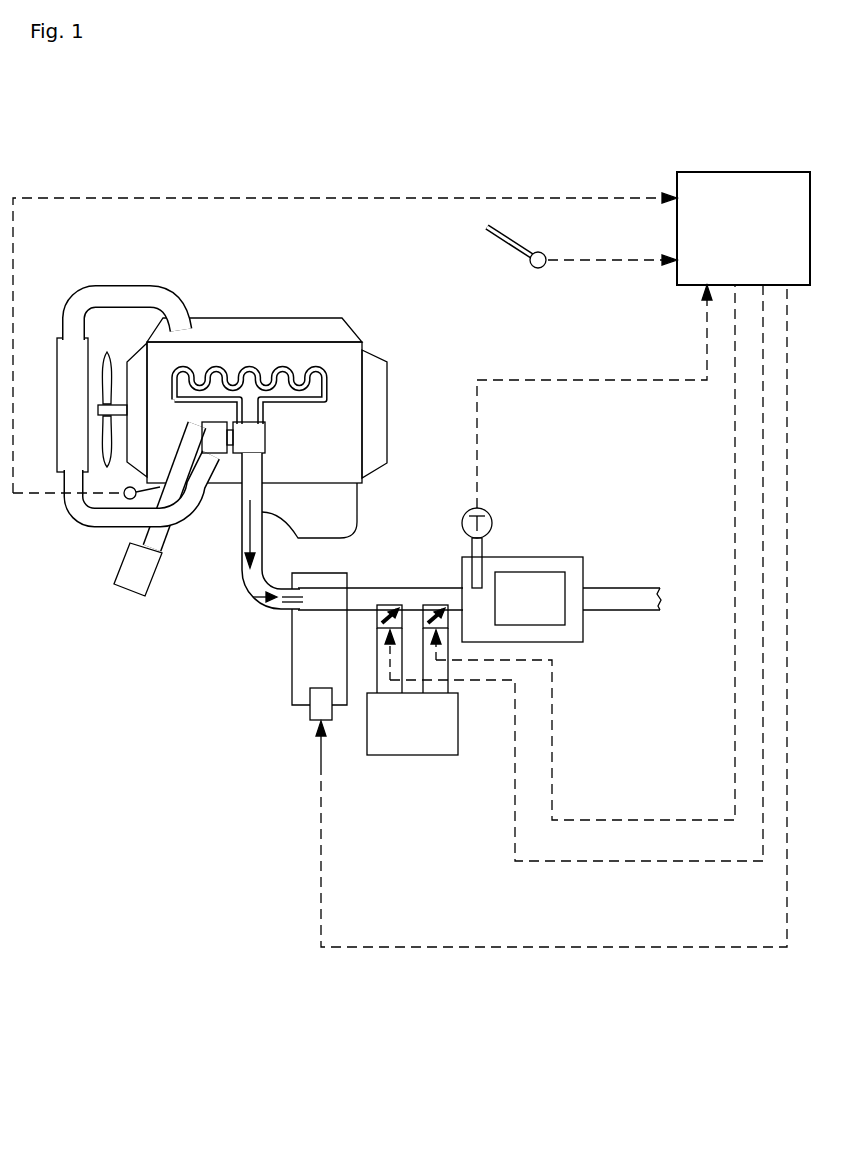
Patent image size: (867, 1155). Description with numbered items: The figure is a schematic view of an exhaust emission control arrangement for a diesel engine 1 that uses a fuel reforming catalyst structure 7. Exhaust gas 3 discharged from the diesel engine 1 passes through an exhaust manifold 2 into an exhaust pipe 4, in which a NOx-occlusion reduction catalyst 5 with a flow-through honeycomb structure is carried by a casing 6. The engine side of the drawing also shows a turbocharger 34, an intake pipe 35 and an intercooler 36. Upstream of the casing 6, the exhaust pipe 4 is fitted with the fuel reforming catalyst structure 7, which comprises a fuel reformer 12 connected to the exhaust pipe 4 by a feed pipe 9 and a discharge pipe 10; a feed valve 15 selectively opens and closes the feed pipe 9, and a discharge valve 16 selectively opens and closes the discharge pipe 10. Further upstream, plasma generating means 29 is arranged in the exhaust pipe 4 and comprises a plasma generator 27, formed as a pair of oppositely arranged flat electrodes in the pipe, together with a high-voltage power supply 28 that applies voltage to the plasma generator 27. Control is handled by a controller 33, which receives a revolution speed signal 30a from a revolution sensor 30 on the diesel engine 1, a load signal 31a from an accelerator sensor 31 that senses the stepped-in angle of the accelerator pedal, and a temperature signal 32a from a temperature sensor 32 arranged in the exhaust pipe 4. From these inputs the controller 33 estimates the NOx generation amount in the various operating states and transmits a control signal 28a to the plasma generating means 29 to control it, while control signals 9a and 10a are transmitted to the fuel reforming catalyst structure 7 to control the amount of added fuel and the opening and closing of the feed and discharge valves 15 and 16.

The diesel engine 1 is at (306, 326).
The exhaust manifold 2 is at (298, 401).
The exhaust gas 3 is at (241, 540).
The exhaust pipe 4 is at (404, 590).
The NOx-occlusion reduction catalyst 5 is at (519, 605).
The casing 6 is at (573, 557).
The fuel reforming catalyst structure 7 is at (450, 790).
The feed pipe 9 is at (378, 660).
The control signal 9a is at (617, 862).
The discharge pipe 10 is at (448, 660).
The control signal 10a is at (654, 820).
The fuel reformer 12 is at (402, 770).
The feed valve 15 is at (386, 606).
The discharge valve 16 is at (438, 606).
The plasma generator 27 is at (252, 600).
The high-voltage power supply 28 is at (300, 725).
The control signal 28a is at (480, 950).
The plasma generating means 29 is at (255, 686).
The revolution sensor 30 is at (128, 500).
The revolution speed signal 30a is at (270, 196).
The accelerator sensor 31 is at (520, 255).
The load signal 31a is at (588, 264).
The temperature sensor 32 is at (465, 508).
The temperature signal 32a is at (660, 382).
The controller 33 is at (733, 185).
The turbocharger 34 is at (258, 437).
The intake pipe 35 is at (88, 524).
The intercooler 36 is at (68, 365).